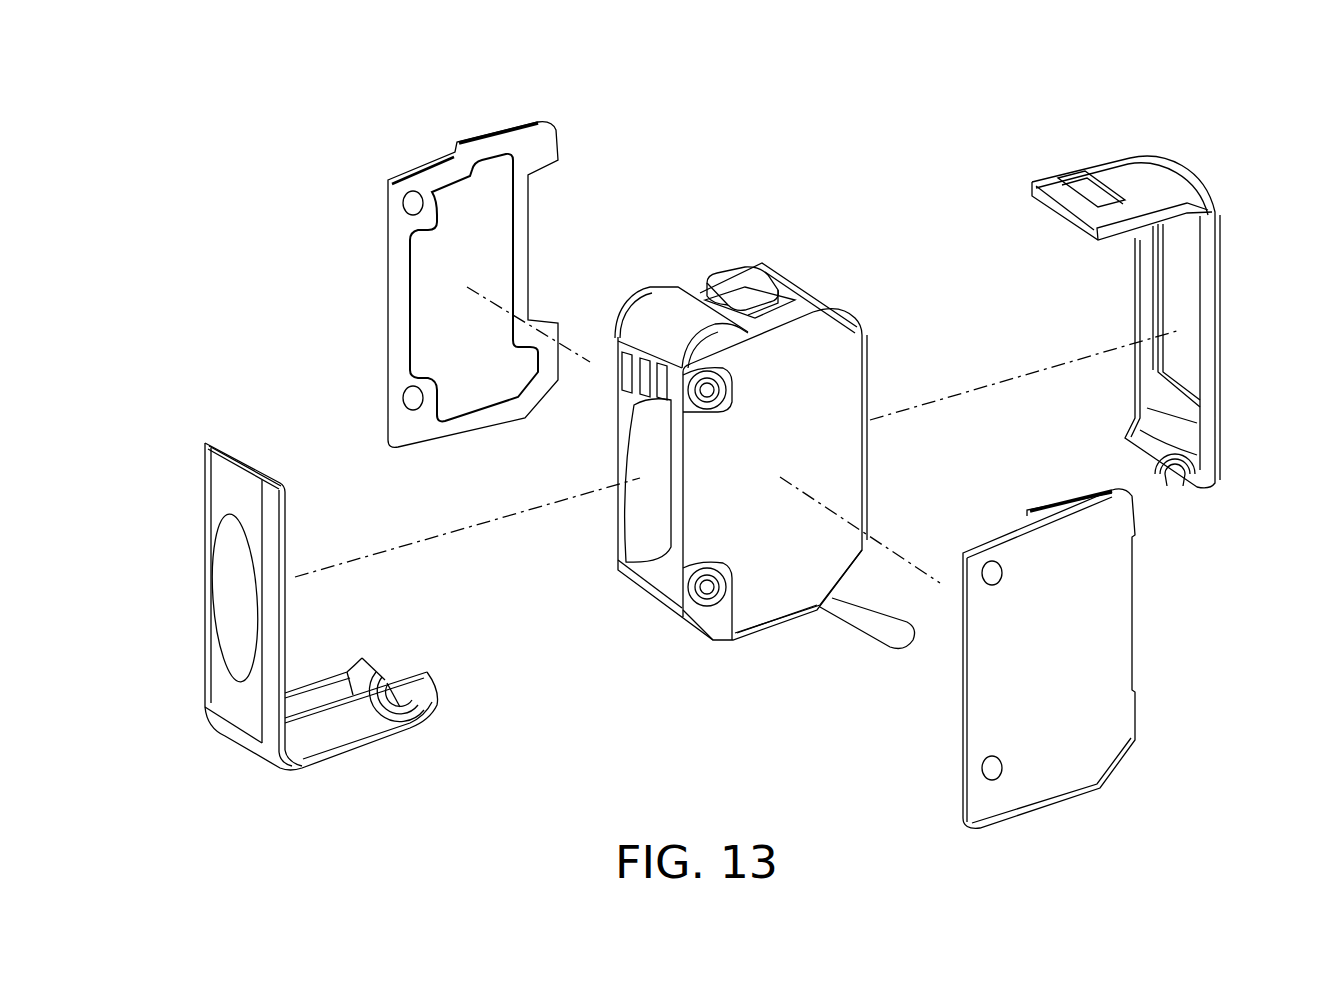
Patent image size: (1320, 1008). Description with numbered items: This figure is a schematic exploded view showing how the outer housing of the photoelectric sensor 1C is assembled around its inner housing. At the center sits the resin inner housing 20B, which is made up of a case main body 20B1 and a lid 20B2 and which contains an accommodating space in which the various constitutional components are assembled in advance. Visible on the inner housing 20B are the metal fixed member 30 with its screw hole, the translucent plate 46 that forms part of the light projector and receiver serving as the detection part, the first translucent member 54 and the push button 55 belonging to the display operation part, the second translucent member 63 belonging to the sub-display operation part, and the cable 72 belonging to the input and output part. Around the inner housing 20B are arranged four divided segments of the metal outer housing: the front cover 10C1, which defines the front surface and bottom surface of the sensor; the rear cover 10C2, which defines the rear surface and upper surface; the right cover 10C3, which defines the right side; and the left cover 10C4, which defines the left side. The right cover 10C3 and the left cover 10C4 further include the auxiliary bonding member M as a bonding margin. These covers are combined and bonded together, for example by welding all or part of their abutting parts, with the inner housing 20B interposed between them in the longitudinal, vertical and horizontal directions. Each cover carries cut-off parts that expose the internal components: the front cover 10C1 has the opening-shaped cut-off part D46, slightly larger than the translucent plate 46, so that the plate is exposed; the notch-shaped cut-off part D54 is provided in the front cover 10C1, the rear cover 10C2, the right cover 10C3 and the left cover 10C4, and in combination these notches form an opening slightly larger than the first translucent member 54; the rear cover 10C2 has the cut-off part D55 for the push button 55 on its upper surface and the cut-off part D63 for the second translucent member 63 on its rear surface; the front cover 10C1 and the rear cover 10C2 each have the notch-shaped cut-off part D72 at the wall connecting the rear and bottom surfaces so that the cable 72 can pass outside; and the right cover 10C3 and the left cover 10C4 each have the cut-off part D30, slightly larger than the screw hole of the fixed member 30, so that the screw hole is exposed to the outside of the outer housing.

The photoelectric sensor 1C is at (218, 147).
The right cover 10C3 is at (433, 248).
The front cover 10C1 is at (237, 492).
The cut-off part D46 is at (213, 583).
The cut-off part D72 is at (408, 693).
The rear cover 10C2 is at (1121, 170).
The cut-off part D55 is at (1072, 172).
The cut-off part D63 is at (1160, 278).
The left cover 10C4 is at (1105, 618).
The cut-off part D54 is at (430, 152).
The auxiliary bonding member M is at (500, 142).
The cut-off part D30 is at (408, 198).
The inner housing 20B is at (820, 686).
The lid 20B2 is at (778, 588).
The case main body 20B1 is at (723, 603).
The fixed member 30 is at (698, 388).
The translucent plate 46 is at (637, 452).
The first translucent member 54 is at (655, 306).
The push button 55 is at (747, 280).
The second translucent member 63 is at (865, 372).
The cable 72 is at (867, 617).